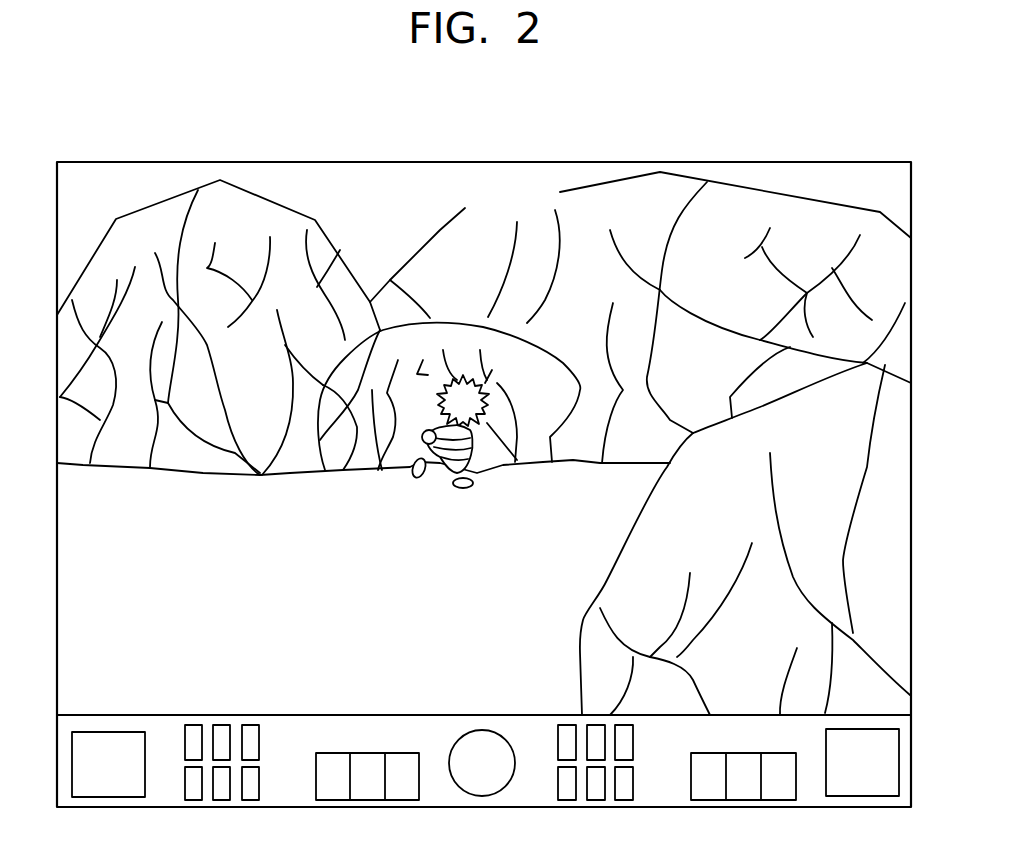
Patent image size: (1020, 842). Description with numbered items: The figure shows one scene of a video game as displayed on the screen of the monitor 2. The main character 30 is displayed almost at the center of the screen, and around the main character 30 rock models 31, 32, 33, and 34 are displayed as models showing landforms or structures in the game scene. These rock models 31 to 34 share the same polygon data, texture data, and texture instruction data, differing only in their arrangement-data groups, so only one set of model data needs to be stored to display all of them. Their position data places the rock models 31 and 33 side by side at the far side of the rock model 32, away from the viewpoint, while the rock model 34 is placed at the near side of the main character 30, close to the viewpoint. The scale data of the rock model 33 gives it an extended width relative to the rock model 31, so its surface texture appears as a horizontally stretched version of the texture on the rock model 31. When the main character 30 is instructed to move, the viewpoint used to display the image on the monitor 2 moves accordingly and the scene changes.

The monitor 2 is at (788, 161).
The main character 30 is at (465, 489).
The rock model 31 is at (282, 223).
The rock model 32 is at (412, 340).
The rock model 33 is at (490, 217).
The rock model 34 is at (615, 597).